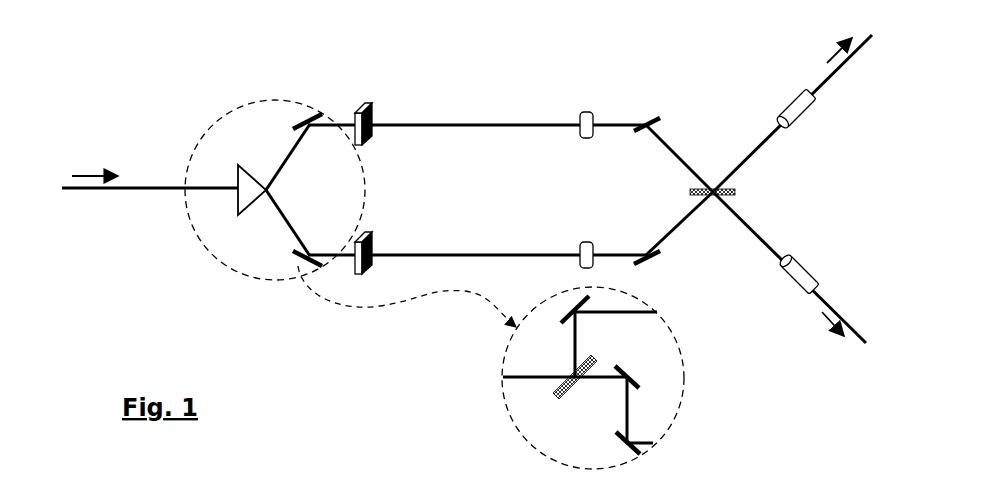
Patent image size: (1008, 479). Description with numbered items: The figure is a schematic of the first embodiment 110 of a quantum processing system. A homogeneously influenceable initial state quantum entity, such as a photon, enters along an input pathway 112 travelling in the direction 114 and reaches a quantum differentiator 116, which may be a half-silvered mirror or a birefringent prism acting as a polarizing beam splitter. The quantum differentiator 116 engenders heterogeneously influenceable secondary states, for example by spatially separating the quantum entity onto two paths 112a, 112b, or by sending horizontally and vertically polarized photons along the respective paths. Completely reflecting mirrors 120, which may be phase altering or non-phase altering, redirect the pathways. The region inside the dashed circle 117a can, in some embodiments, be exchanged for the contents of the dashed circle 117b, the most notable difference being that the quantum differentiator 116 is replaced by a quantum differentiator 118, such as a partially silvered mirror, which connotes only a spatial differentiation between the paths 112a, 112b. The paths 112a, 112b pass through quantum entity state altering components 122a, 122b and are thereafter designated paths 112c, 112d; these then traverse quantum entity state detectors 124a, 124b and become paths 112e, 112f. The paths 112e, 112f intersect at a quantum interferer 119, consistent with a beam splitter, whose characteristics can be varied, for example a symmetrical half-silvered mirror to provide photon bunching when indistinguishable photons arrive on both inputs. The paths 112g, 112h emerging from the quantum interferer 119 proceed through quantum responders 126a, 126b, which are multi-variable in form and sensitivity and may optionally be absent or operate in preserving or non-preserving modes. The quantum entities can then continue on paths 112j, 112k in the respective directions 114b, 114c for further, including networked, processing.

The first embodiment 110 is at (222, 318).
The input pathway 112 is at (176, 195).
The path 112a is at (296, 146).
The path 112b is at (281, 214).
The path 112c is at (548, 128).
The path 112d is at (481, 253).
The path 112e is at (668, 146).
The path 112f is at (689, 218).
The path 112g is at (764, 142).
The path 112h is at (760, 226).
The path 112j is at (838, 78).
The path 112k is at (850, 320).
The direction 114 is at (95, 168).
The direction 114b is at (840, 48).
The direction 114c is at (834, 341).
The quantum differentiator 116 is at (234, 176).
The dashed circle 117a is at (252, 102).
The dashed circle 117b is at (678, 424).
The quantum differentiator 118 is at (566, 391).
The quantum interferer 119 is at (688, 192).
The completely reflecting mirror 120 is at (304, 117).
The quantum entity state altering component 122a is at (376, 112).
The quantum entity state altering component 122b is at (375, 241).
The quantum entity state detector 124a is at (582, 114).
The quantum entity state detector 124b is at (582, 244).
The quantum responder 126a is at (790, 97).
The quantum responder 126b is at (790, 272).